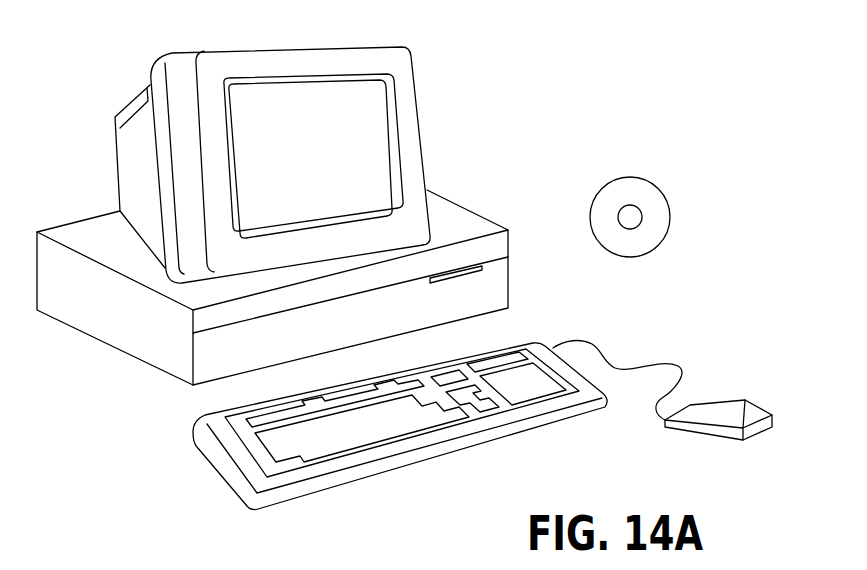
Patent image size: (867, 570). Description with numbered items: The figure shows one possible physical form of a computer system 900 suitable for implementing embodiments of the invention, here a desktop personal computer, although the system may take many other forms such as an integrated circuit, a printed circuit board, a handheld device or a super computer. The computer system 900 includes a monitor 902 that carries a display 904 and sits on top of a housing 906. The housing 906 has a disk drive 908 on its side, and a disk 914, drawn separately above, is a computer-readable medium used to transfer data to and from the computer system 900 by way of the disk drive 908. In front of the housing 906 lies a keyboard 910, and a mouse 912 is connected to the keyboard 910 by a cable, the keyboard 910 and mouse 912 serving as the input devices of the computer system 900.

The computer system 900 is at (540, 92).
The monitor 902 is at (422, 138).
The display 904 is at (380, 110).
The housing 906 is at (148, 367).
The disk drive 908 is at (482, 267).
The keyboard 910 is at (493, 440).
The mouse 912 is at (747, 410).
The disk 914 is at (647, 180).